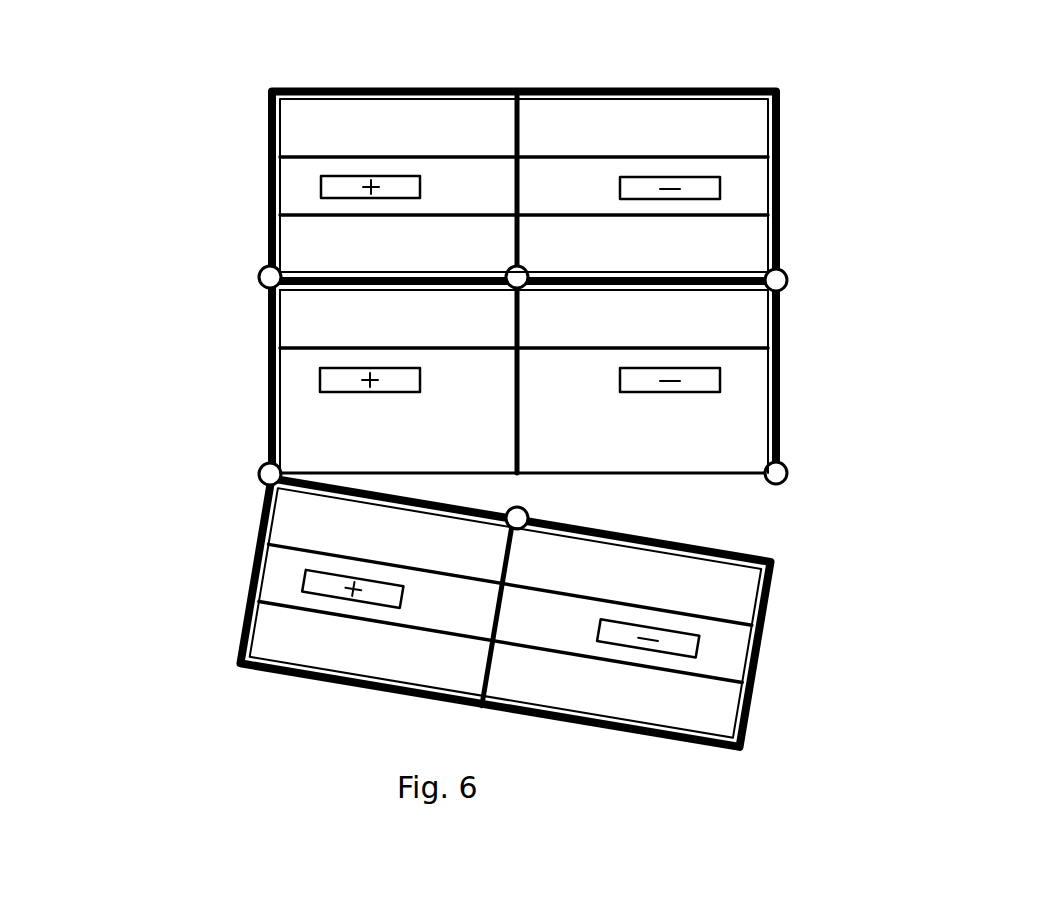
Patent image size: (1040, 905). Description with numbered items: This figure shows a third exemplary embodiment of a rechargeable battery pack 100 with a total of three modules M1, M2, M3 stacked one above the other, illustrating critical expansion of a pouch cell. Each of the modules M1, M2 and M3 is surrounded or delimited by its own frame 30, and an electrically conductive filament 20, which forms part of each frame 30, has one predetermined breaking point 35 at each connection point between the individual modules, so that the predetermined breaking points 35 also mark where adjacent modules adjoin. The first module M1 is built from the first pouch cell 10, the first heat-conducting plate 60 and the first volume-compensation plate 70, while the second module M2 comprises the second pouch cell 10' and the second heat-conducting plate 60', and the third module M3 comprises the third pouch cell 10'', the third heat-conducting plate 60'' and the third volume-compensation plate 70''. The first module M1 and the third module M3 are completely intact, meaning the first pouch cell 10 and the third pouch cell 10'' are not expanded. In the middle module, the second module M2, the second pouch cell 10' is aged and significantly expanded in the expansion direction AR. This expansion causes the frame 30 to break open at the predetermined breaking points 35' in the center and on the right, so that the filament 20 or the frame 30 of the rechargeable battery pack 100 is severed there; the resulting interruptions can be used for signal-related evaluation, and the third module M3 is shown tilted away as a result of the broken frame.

The rechargeable battery pack 100 is at (940, 192).
The first module M1 is at (528, 178).
The second module M2 is at (543, 370).
The third module M3 is at (525, 627).
The first pouch cell 10 is at (441, 184).
The second pouch cell 10' is at (518, 419).
The third pouch cell 10'' is at (431, 610).
The electrically conductive filament 20 is at (515, 135).
The frame 30 is at (797, 88).
The predetermined breaking point 35 is at (492, 266).
The predetermined breaking point 35' is at (565, 646).
The first heat-conducting plate 60 is at (474, 121).
The second heat-conducting plate 60' is at (476, 321).
The third heat-conducting plate 60'' is at (466, 557).
The first volume-compensation plate 70 is at (471, 233).
The third volume-compensation plate 70'' is at (451, 642).
The expansion direction AR is at (930, 487).